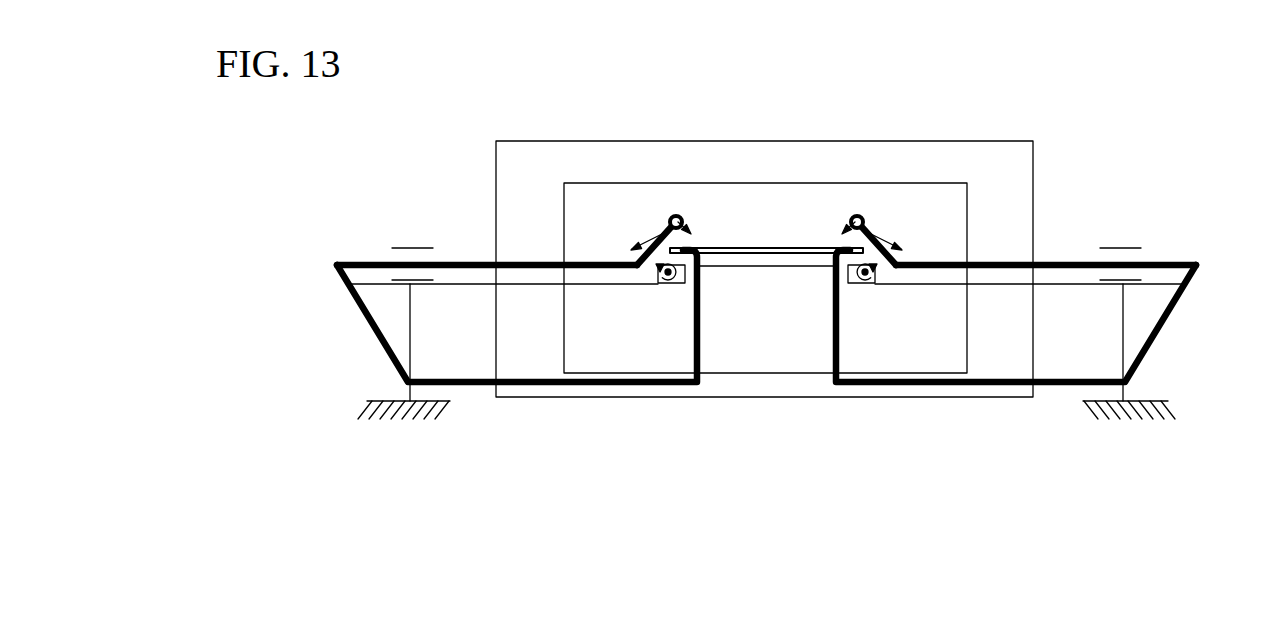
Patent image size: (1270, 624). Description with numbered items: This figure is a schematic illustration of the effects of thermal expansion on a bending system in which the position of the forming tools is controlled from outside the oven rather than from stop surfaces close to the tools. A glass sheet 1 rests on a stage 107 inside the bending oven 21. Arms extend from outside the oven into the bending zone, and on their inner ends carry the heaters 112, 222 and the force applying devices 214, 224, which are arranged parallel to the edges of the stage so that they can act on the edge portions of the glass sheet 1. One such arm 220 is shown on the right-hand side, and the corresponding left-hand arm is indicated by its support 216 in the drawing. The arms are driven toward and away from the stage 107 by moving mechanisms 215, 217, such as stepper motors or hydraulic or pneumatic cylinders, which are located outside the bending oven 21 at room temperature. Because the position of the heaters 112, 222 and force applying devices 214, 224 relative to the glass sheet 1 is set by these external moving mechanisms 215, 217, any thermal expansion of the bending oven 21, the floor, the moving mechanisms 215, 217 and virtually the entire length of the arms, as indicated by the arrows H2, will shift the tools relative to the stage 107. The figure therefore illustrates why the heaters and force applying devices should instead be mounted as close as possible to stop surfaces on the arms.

The glass sheet 1 is at (829, 238).
The bending oven 21 is at (990, 141).
The stage 107 is at (763, 258).
The heater 112 is at (654, 215).
The force applying device 214 is at (657, 298).
The moving mechanism 215 is at (365, 402).
The side wall 216 is at (466, 279).
The moving mechanism 217 is at (1175, 410).
The arm 220 is at (1062, 277).
The heater 222 is at (880, 215).
The force applying device 224 is at (883, 282).
The thermally expanding length H2 is at (470, 384).